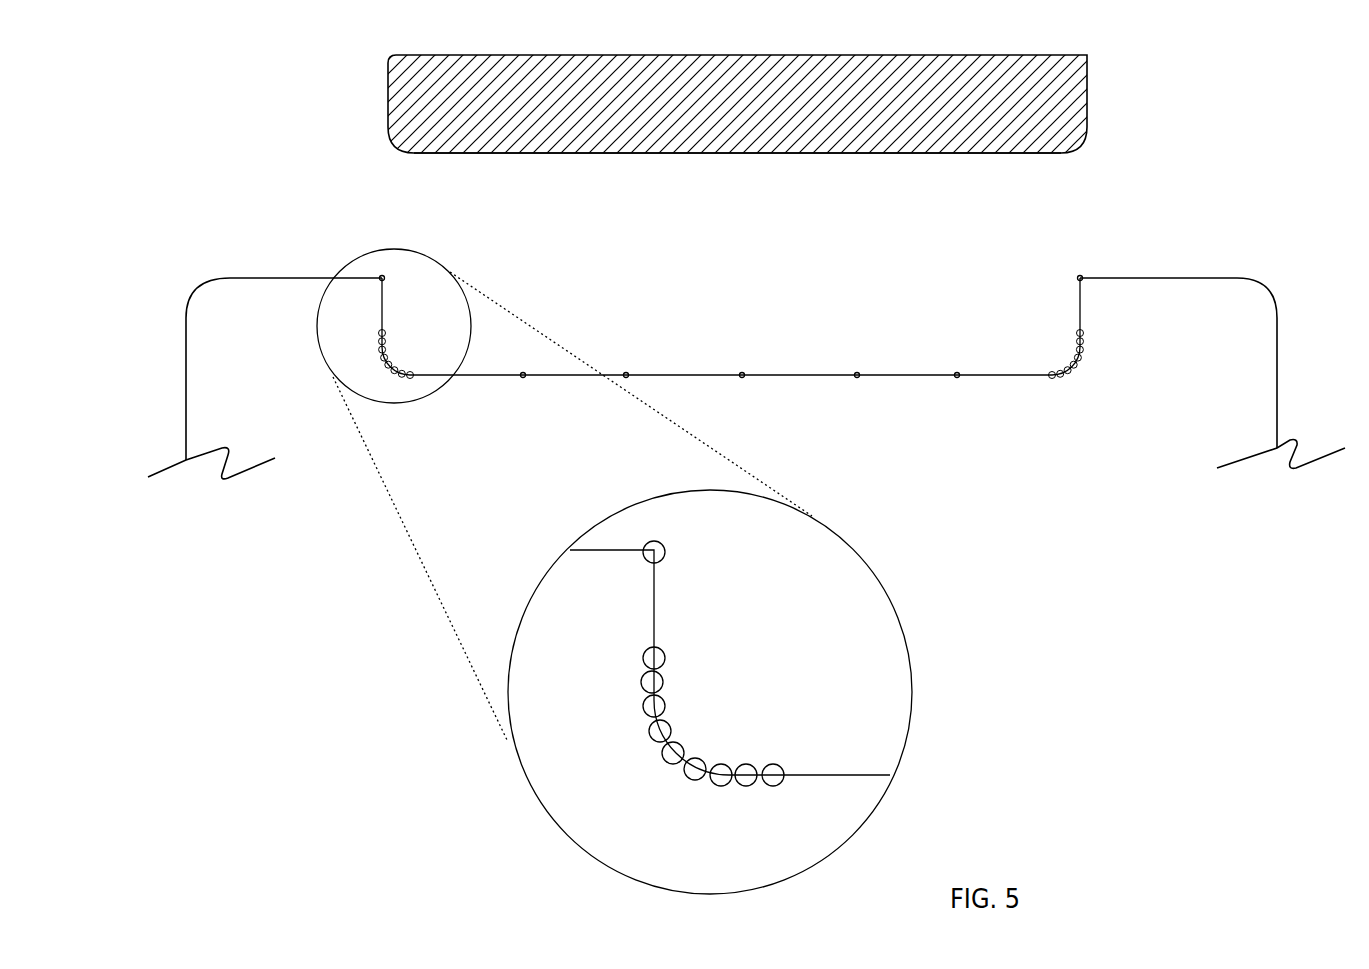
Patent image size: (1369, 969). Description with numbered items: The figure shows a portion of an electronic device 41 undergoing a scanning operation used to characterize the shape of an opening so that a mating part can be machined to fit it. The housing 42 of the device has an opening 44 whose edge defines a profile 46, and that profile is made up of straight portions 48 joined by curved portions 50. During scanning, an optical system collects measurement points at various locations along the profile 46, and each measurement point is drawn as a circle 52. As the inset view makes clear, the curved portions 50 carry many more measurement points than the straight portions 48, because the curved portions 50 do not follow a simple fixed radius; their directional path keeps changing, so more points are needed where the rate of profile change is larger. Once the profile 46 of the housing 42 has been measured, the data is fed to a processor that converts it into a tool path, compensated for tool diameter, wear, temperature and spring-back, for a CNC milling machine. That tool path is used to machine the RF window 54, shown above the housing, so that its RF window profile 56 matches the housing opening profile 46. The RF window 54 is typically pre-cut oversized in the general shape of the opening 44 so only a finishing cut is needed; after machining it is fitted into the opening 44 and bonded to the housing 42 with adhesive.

The electronic device 41 is at (257, 218).
The housing 42 is at (1165, 287).
The opening 44 is at (730, 338).
The profile 46 is at (762, 370).
The straight portions 48 is at (370, 300).
The curved portions 50 is at (374, 353).
The circle 52 is at (720, 780).
The RF window 54 is at (1066, 107).
The RF window profile 56 is at (763, 157).